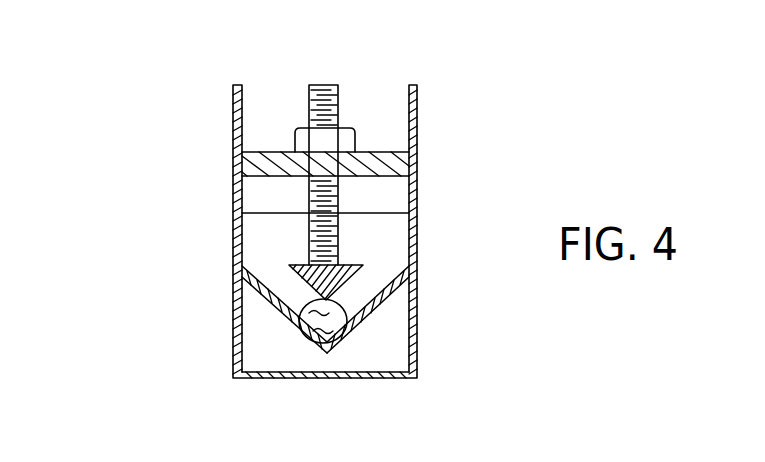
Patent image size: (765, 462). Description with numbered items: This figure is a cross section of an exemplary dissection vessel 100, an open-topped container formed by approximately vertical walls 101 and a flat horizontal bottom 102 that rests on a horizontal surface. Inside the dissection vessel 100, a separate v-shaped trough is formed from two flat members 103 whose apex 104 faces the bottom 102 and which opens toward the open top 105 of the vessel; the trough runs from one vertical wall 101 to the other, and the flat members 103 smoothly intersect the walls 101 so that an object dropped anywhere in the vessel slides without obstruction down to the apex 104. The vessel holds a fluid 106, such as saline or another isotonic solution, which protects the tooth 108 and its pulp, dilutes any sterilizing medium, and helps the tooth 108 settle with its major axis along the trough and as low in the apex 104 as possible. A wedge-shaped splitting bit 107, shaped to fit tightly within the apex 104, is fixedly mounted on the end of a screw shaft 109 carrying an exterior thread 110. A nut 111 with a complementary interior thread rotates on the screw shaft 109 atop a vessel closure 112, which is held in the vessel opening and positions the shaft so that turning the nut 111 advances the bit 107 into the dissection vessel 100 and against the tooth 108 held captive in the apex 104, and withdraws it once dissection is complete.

The dissection vessel 100 is at (112, 105).
The vertical walls 101 is at (233, 202).
The horizontal bottom 102 is at (403, 378).
The flat members 103 is at (275, 316).
The apex of the trough 104 is at (327, 355).
The open top of the dissection vessel 105 is at (377, 102).
The fluid 106 is at (393, 245).
The splitting bit 107 is at (303, 280).
The tooth 108 is at (303, 328).
The screw shaft 109 is at (309, 240).
The exterior thread 110 is at (308, 95).
The nut 111 is at (297, 132).
The vessel closure 112 is at (413, 158).